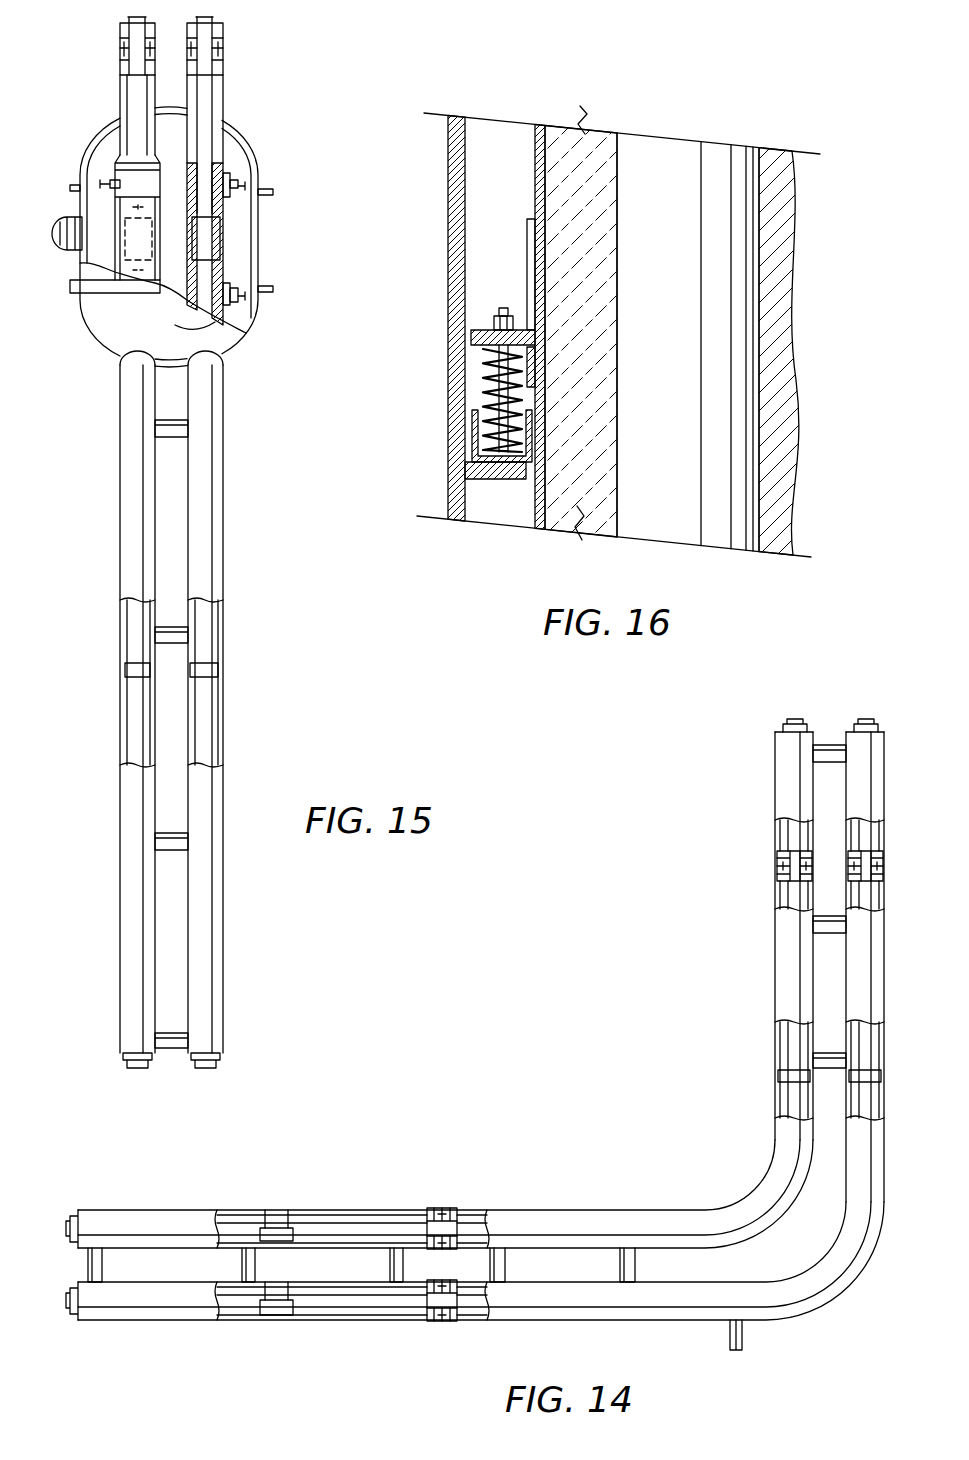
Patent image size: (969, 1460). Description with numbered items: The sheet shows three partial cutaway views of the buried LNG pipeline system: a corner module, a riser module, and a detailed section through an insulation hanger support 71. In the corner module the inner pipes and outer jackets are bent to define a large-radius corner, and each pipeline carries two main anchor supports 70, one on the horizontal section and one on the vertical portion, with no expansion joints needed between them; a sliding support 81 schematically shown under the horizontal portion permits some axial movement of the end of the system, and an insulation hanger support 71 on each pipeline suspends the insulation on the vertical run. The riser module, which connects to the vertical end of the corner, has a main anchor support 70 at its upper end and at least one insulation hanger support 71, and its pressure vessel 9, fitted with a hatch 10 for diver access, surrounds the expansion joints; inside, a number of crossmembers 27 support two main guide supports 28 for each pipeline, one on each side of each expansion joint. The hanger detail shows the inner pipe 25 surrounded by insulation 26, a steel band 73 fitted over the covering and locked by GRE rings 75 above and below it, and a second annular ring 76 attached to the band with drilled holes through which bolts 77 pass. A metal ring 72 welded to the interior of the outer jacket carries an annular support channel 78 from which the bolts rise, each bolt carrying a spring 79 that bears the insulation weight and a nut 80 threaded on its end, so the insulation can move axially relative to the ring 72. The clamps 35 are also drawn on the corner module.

In FIG. 15, the pressure vessel 9 is at (240, 140).
In FIG. 15, the hatch 10 is at (55, 225).
In FIG. 16, the inner pipe 25 is at (660, 352).
In FIG. 16, the insulation 26 is at (600, 250).
In FIG. 15, the crossmembers 27 is at (100, 184).
In FIG. 15, the main guide supports 28 is at (110, 180).
In FIG. 14, the clamp 35 is at (280, 1228).
In FIG. 15, the main anchor support 70 is at (118, 50).
In FIG. 14, the main anchor support 70 is at (777, 860).
In FIG. 15, the insulation hanger support 71 is at (125, 670).
In FIG. 14, the insulation hanger support 71 is at (778, 1074).
In FIG. 16, the metal ring 72 is at (485, 480).
In FIG. 16, the steel band 73 is at (527, 240).
In FIG. 16, the GRE rings 75 is at (535, 160).
In FIG. 16, the second annular ring 76 is at (471, 338).
In FIG. 16, the bolts 77 is at (503, 308).
In FIG. 16, the annular support channel 78 is at (472, 430).
In FIG. 16, the spring 79 is at (483, 392).
In FIG. 16, the nut 80 is at (494, 322).
In FIG. 14, the sliding support 81 is at (742, 1342).